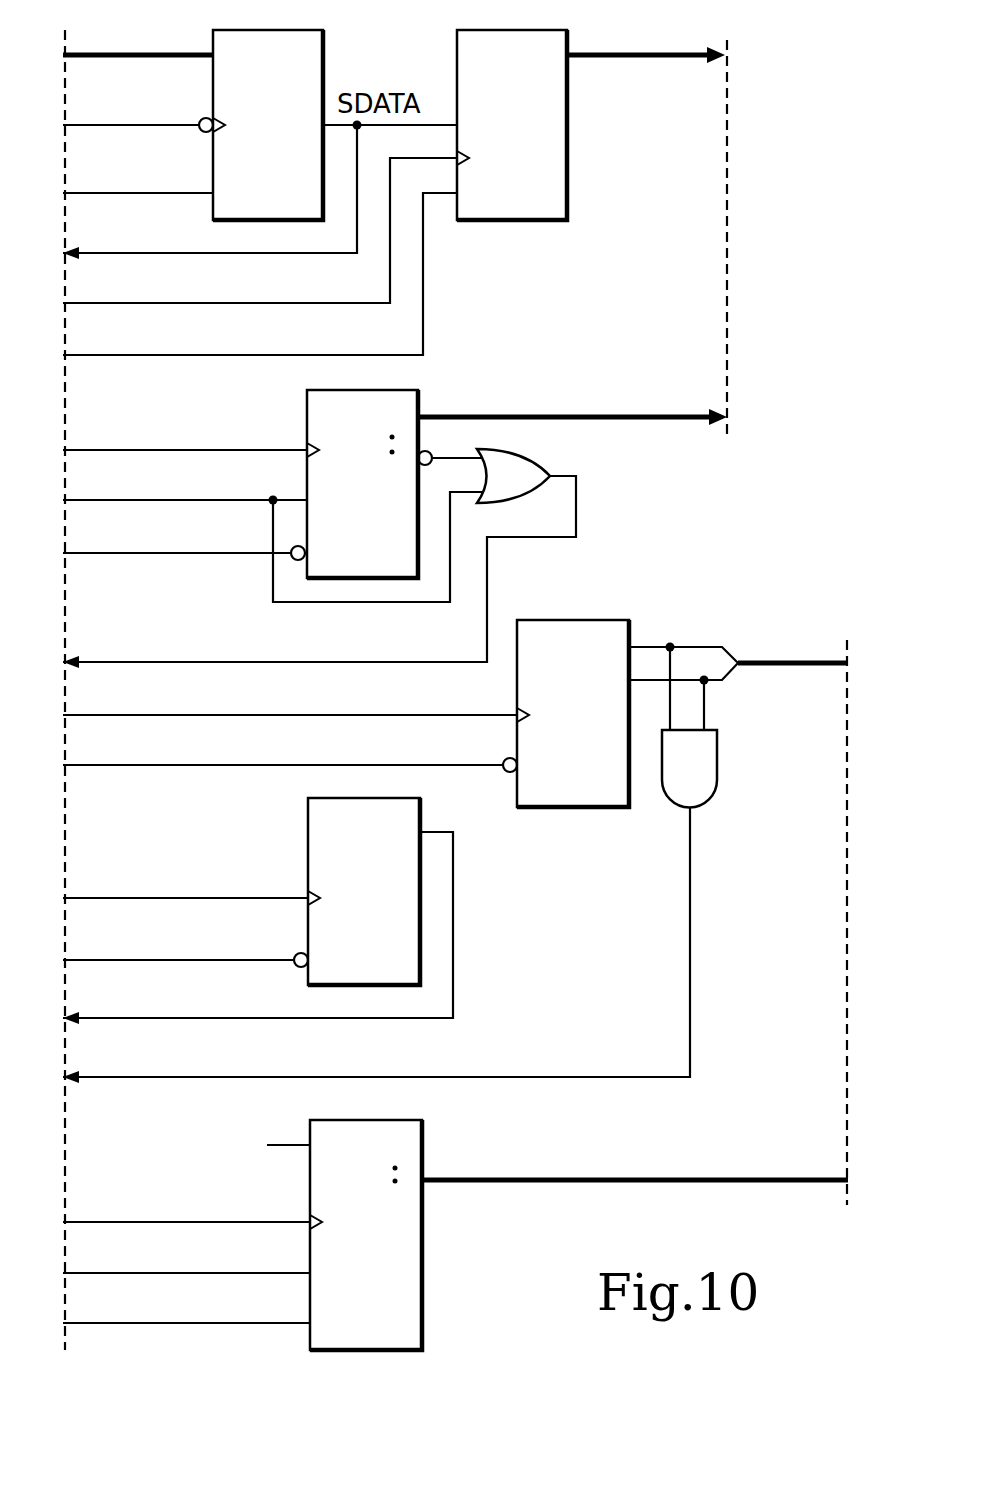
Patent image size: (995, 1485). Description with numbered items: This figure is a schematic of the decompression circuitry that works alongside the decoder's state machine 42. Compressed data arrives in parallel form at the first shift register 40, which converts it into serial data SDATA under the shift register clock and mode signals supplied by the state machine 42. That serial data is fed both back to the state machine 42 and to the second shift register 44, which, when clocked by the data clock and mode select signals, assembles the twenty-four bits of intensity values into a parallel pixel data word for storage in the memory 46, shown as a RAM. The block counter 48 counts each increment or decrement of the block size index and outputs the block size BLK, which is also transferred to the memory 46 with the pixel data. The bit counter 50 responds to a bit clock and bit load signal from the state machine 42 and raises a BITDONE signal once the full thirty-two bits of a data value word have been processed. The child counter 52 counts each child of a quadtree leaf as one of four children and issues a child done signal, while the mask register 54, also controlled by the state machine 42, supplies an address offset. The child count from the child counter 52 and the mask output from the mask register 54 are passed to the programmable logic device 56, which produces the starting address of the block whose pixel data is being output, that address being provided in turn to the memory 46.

The first shift register 40 is at (323, 44).
The state machine 42 is at (49, 690).
The second shift register 44 is at (569, 115).
The memory 46 is at (744, 240).
The block counter 48 is at (418, 405).
The bit counter 50 is at (308, 830).
The child counter 52 is at (575, 620).
The mask register 54 is at (422, 1250).
The programmable logic device 56 is at (864, 922).